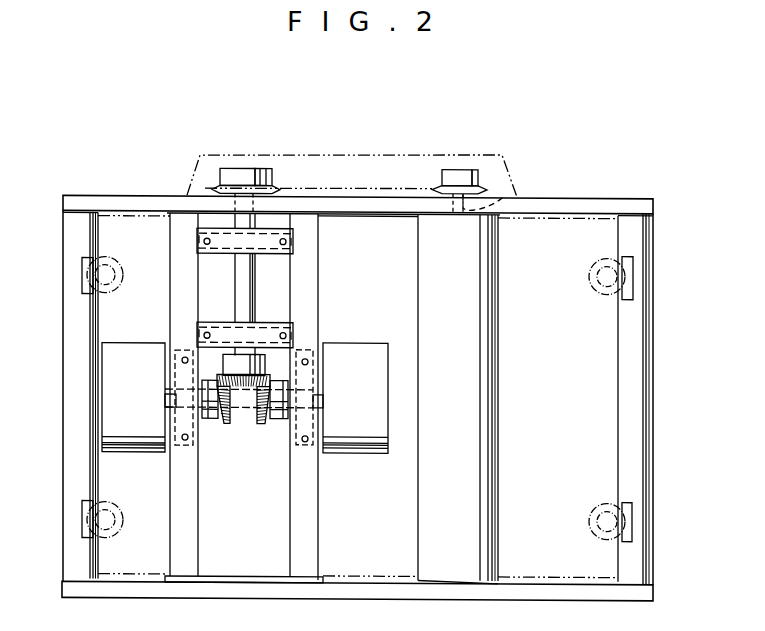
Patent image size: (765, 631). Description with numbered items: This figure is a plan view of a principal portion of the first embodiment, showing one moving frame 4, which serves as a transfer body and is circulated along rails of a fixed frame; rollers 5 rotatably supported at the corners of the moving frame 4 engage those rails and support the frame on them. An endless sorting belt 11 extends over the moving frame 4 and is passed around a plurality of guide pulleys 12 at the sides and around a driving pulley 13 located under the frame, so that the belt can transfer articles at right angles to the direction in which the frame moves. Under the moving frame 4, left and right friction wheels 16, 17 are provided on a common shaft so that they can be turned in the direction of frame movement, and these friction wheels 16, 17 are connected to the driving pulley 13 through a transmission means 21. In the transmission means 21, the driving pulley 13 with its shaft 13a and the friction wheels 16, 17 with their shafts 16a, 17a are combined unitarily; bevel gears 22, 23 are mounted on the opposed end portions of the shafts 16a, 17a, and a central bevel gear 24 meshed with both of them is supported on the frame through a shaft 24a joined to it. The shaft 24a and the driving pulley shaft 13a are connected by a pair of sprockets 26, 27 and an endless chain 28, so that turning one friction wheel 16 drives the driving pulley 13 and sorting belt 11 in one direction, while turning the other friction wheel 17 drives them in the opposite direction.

The moving frame 4 is at (622, 202).
The rollers 5 is at (120, 261).
The sorting belt 11 is at (563, 214).
The guide pulleys 12 is at (66, 445).
The driving pulley 13 is at (473, 434).
The shaft 13a is at (506, 191).
The friction wheel 16 is at (132, 345).
The shaft 16a is at (166, 397).
The friction wheel 17 is at (368, 345).
The shaft 17a is at (332, 400).
The transmission means 21 is at (337, 148).
The bevel gear 22 is at (237, 386).
The bevel gear 23 is at (250, 386).
The bevel gear 24 is at (244, 388).
The shaft 24a is at (256, 281).
The sprocket 26 is at (237, 167).
The sprocket 27 is at (457, 167).
The endless chain 28 is at (387, 186).